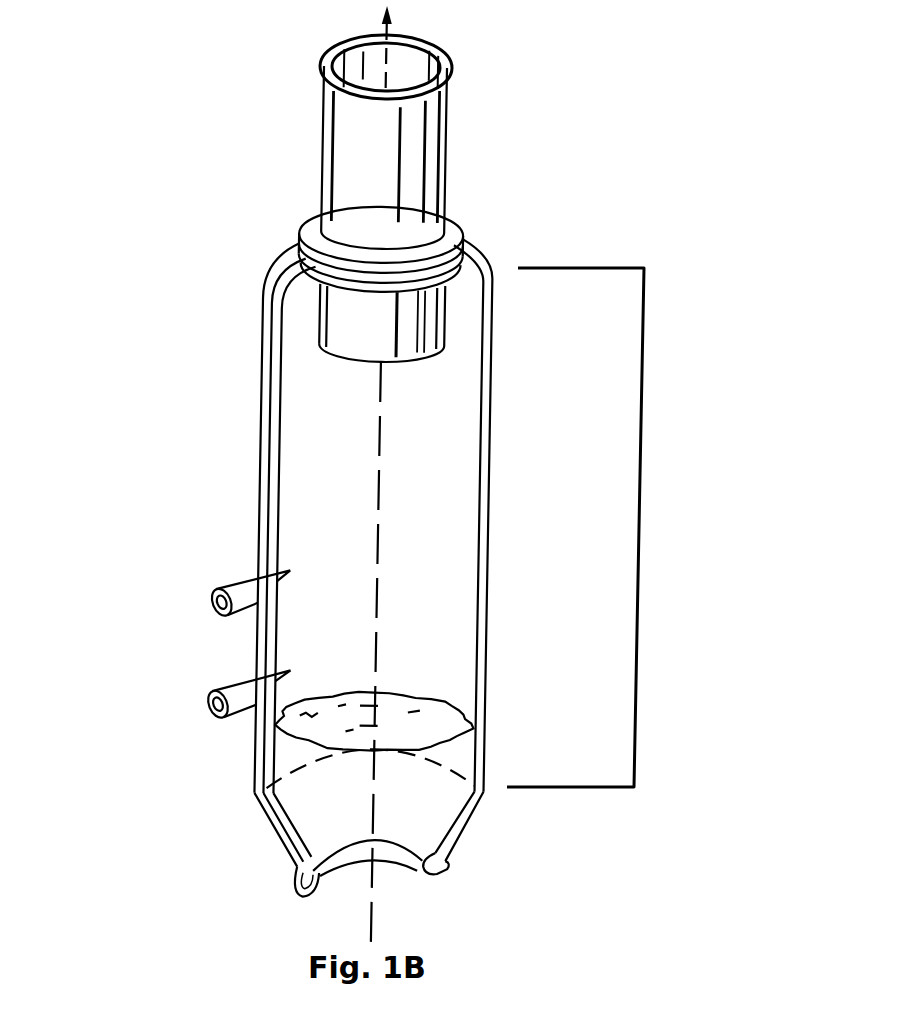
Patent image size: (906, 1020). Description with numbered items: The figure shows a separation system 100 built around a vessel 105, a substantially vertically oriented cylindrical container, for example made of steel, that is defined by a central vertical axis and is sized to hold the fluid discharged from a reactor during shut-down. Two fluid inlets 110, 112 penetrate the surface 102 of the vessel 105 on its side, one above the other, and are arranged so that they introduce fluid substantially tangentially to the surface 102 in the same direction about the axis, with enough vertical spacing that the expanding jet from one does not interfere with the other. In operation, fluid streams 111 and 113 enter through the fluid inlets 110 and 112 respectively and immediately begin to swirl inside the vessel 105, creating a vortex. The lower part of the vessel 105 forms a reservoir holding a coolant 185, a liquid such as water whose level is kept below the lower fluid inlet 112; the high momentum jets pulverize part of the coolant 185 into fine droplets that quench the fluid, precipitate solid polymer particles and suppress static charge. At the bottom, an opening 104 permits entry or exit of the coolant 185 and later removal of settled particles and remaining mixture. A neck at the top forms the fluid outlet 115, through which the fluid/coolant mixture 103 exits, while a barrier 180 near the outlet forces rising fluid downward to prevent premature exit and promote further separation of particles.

The separation system 100 is at (500, 185).
The surface 102 is at (262, 368).
The fluid/coolant mixture 103 is at (392, 33).
The opening 104 is at (355, 872).
The vessel 105 is at (639, 535).
The fluid inlet 110 is at (240, 585).
The fluid stream 111 is at (207, 618).
The fluid inlet 112 is at (237, 690).
The fluid stream 113 is at (205, 718).
The fluid outlet 115 is at (452, 112).
The barrier 180 is at (322, 312).
The coolant 185 is at (292, 745).